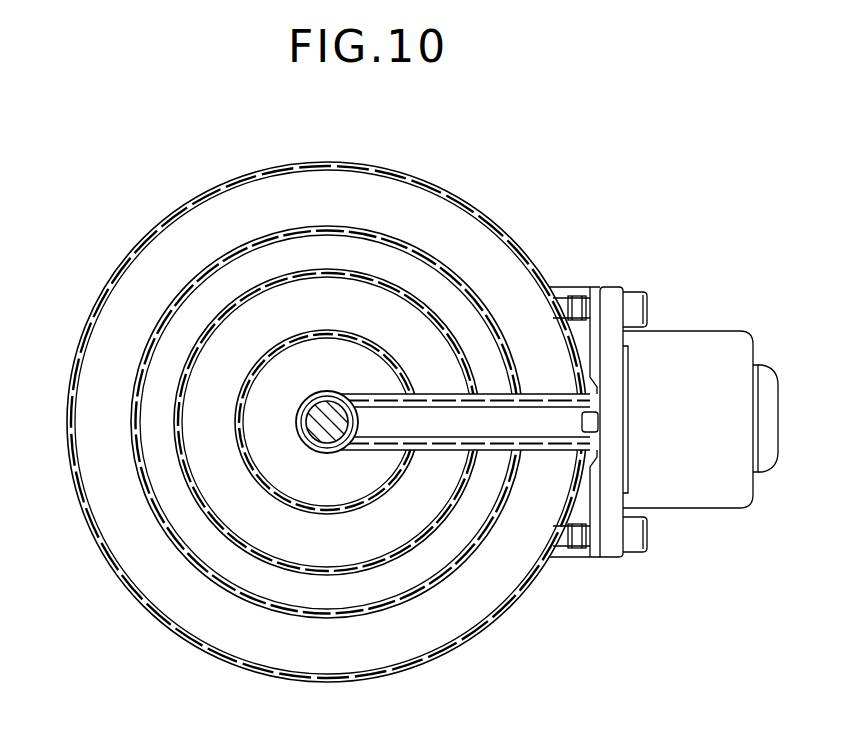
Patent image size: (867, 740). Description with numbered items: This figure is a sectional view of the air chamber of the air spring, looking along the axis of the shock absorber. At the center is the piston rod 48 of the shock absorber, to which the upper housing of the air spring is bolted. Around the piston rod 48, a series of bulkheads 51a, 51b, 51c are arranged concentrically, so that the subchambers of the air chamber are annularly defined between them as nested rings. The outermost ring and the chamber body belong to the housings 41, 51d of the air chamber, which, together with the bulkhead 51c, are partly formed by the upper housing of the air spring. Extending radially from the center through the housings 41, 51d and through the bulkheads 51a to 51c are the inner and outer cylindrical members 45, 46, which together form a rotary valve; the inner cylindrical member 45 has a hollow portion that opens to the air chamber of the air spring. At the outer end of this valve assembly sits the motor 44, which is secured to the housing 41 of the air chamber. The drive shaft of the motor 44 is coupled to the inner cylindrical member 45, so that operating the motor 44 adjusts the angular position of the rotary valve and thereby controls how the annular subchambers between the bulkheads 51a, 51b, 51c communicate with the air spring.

The housing 41 is at (75, 487).
The motor 44 is at (715, 348).
The inner cylindrical member 45 is at (497, 433).
The outer cylindrical member 46 is at (492, 388).
The piston rod 48 is at (307, 452).
The bulkhead 51a is at (383, 613).
The bulkhead 51b is at (419, 533).
The bulkhead 51c is at (245, 465).
The housing 51d is at (298, 407).